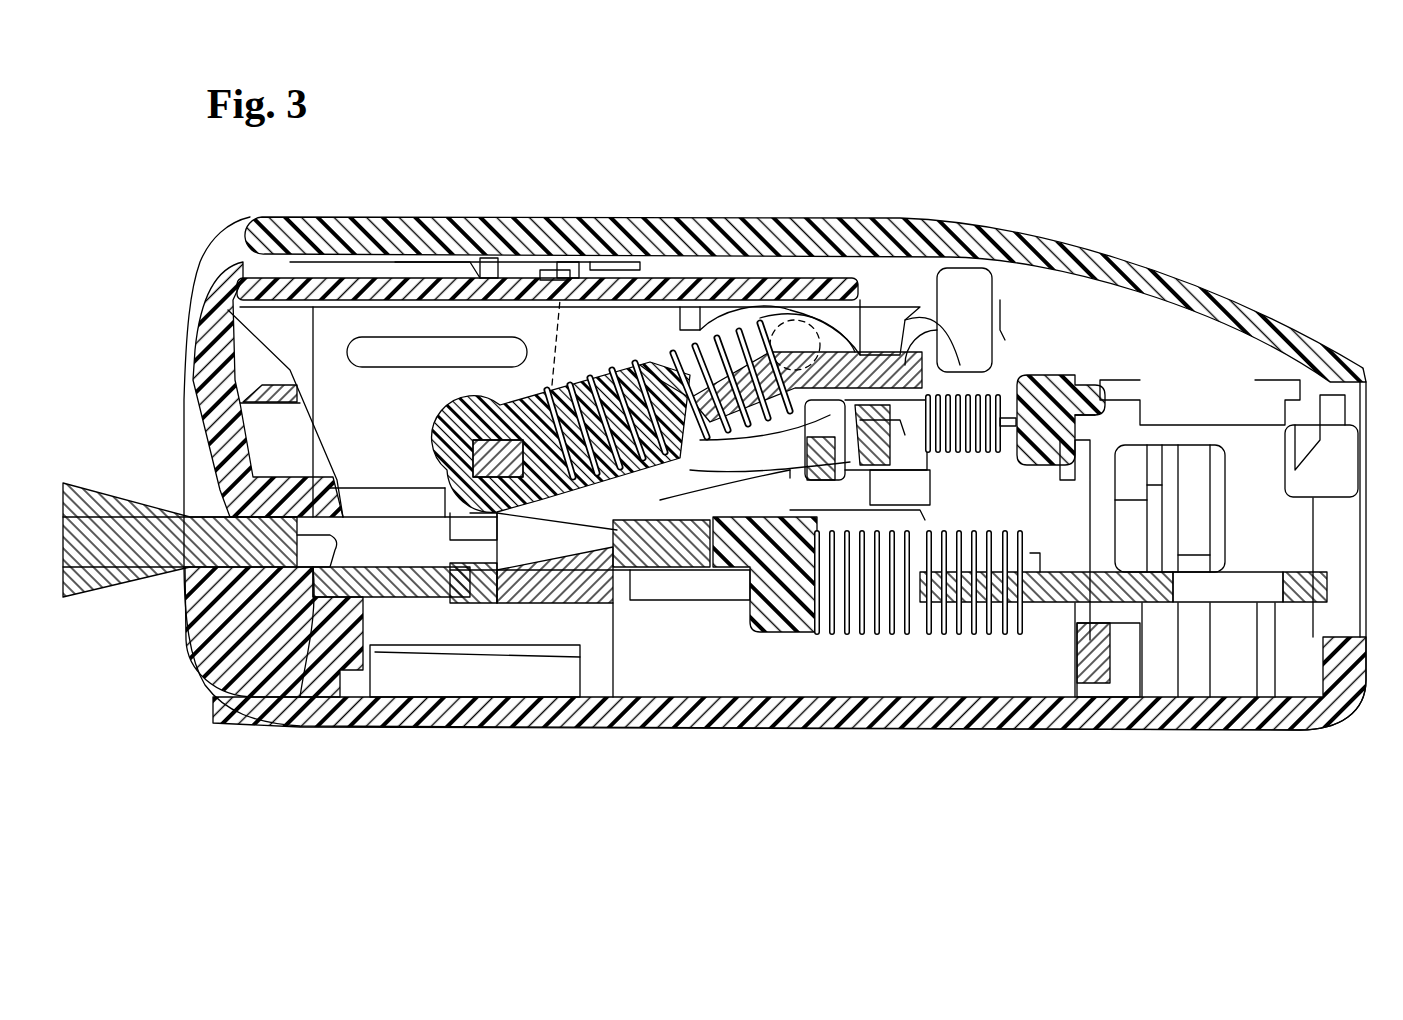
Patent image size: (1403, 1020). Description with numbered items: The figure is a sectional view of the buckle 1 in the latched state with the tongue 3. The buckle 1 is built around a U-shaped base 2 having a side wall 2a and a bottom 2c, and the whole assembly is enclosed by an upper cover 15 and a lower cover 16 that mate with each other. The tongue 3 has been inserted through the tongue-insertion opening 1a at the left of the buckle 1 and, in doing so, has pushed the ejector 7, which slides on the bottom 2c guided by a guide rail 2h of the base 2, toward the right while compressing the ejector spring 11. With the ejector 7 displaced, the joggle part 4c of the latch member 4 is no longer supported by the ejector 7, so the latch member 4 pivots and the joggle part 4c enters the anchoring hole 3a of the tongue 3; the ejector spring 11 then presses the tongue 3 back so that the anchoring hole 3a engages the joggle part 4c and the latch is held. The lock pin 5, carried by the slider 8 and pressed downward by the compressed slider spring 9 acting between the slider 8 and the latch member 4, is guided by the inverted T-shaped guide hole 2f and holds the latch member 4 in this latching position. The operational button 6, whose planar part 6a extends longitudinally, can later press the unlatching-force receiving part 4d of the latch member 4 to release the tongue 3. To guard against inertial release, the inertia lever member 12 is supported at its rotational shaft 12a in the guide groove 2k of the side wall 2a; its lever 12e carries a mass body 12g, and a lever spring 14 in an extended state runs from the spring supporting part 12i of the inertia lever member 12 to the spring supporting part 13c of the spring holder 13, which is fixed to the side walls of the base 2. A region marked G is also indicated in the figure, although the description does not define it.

The buckle 1 is at (428, 174).
The tongue-insertion opening 1a is at (190, 568).
The base 2 is at (1318, 520).
The side wall 2a is at (1247, 408).
The bottom 2c is at (1050, 605).
The inverted T-shaped guide hole 2f is at (552, 285).
The guide rail 2h is at (677, 585).
The guide groove 2k is at (688, 325).
The tongue 3 is at (130, 560).
The anchoring hole 3a is at (303, 700).
The latch member 4 is at (880, 350).
The joggle part 4c is at (525, 570).
The unlatching-force receiving part 4d is at (965, 295).
The lock pin 5 is at (470, 425).
The operational button 6 is at (196, 360).
The planar part 6a is at (597, 260).
The ejector 7 is at (777, 626).
The slider 8 is at (516, 398).
The slider spring 9 is at (636, 350).
The ejector spring 11 is at (880, 640).
The inertia lever member 12 is at (782, 452).
The rotational shaft 12a is at (798, 325).
The lever 12e is at (552, 385).
The mass body 12g is at (905, 430).
The spring supporting part 12i is at (890, 505).
The spring holder 13 is at (1035, 380).
The spring supporting part 13c is at (1105, 395).
The lever spring 14 is at (998, 445).
The upper cover 15 is at (1062, 242).
The lower cover 16 is at (741, 728).
The gap G is at (790, 489).